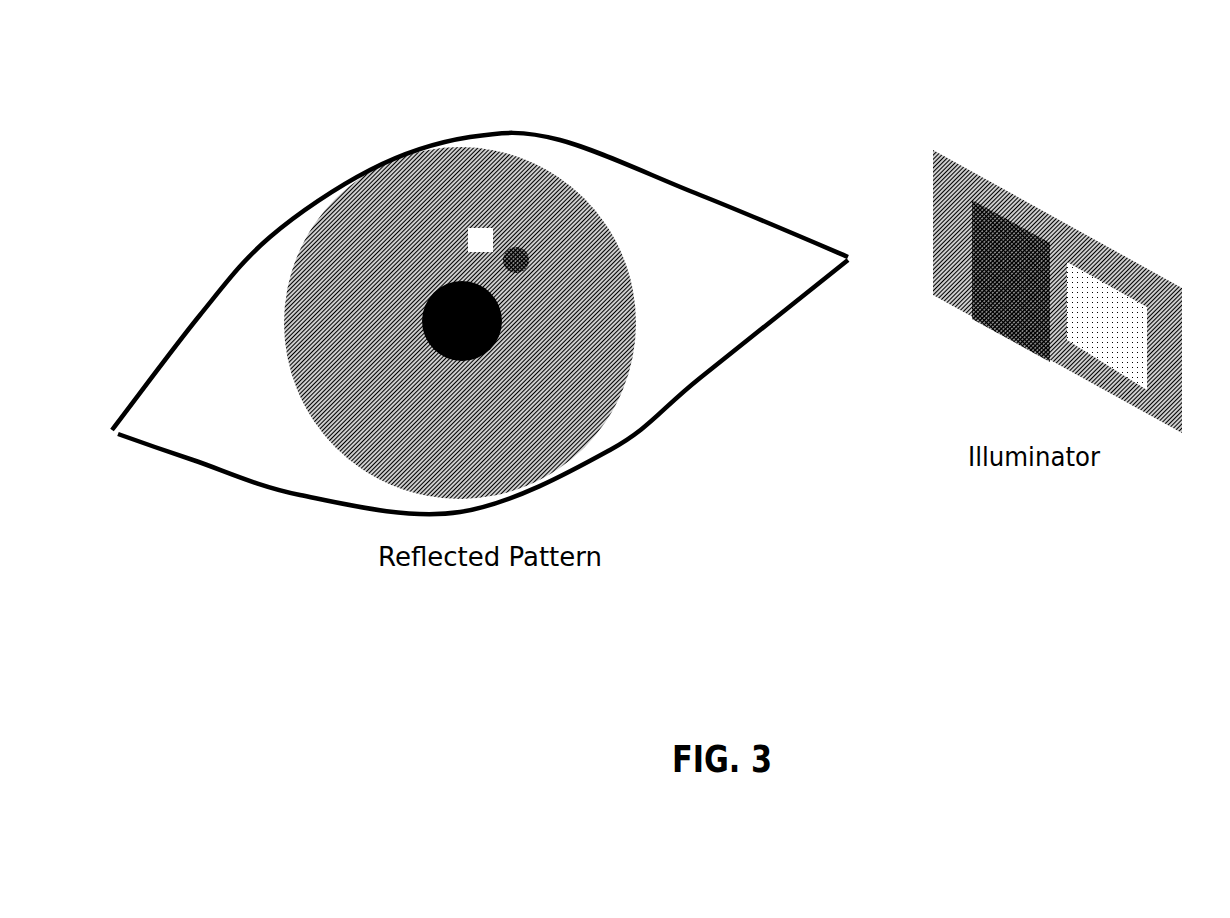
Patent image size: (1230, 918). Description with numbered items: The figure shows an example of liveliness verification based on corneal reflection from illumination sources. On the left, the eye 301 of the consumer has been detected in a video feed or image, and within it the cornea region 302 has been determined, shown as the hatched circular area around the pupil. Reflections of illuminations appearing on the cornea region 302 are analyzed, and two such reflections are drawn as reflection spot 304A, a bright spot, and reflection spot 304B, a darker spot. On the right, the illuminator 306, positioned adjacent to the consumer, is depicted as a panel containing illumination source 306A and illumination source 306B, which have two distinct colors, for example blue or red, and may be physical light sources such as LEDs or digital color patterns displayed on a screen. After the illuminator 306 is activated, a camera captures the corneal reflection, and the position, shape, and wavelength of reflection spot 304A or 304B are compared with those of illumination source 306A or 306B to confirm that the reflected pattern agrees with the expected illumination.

The eye 301 is at (205, 367).
The cornea region 302 is at (343, 235).
The reflection spot 304A is at (473, 235).
The reflection spot 304B is at (517, 253).
The illuminator 306 is at (948, 173).
The illumination source 306B is at (1015, 250).
The illumination source 306A is at (1113, 310).